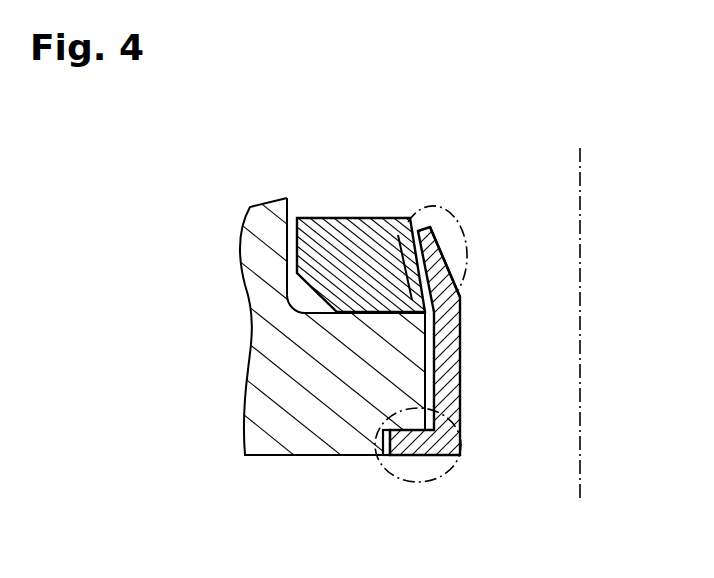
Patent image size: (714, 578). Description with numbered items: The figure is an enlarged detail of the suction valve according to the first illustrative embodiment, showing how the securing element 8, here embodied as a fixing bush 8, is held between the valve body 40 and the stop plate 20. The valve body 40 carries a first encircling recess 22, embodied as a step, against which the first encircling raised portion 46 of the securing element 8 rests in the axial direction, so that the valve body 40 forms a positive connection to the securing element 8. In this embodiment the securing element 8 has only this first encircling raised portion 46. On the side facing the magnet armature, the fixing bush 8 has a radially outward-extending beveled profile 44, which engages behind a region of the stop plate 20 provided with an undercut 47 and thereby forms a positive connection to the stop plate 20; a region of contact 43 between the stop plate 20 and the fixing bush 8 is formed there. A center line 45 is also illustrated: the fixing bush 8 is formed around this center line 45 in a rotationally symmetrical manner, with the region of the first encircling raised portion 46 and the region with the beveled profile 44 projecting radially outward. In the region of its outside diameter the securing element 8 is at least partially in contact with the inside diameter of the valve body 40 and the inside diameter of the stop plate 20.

The securing element 8 is at (447, 355).
The stop plate 20 is at (344, 213).
The first encircling recess 22 is at (386, 457).
The valve body 40 is at (268, 342).
The region of contact 43 is at (462, 265).
The beveled profile 44 is at (436, 260).
The center line 45 is at (582, 182).
The first encircling raised portion 46 is at (424, 457).
The undercut 47 is at (406, 272).